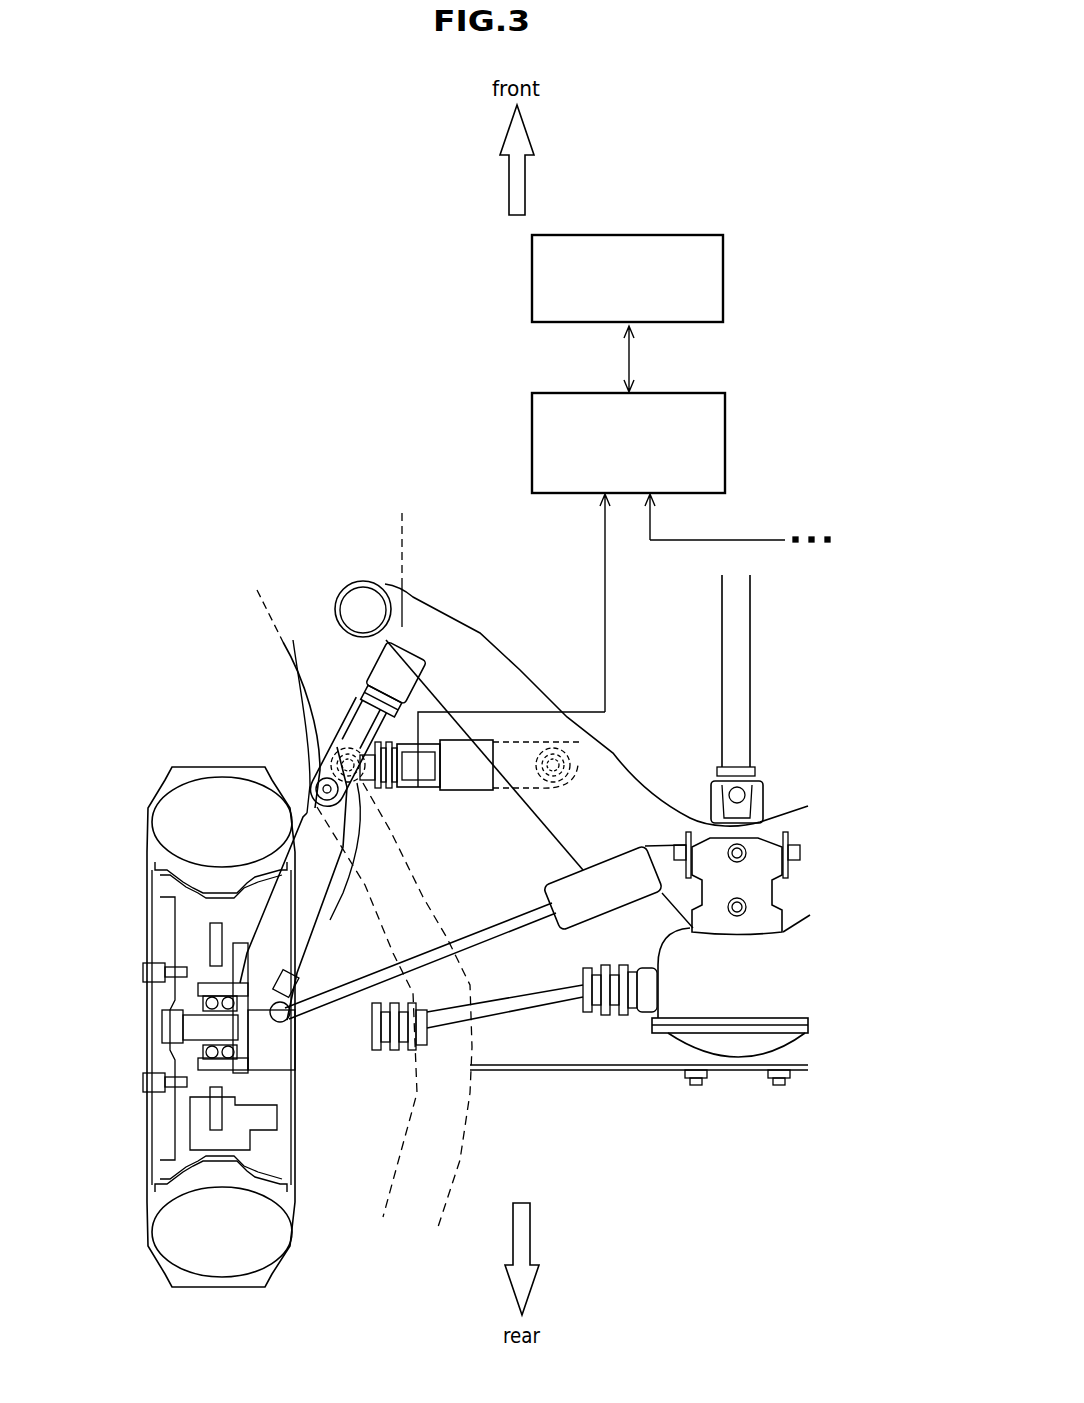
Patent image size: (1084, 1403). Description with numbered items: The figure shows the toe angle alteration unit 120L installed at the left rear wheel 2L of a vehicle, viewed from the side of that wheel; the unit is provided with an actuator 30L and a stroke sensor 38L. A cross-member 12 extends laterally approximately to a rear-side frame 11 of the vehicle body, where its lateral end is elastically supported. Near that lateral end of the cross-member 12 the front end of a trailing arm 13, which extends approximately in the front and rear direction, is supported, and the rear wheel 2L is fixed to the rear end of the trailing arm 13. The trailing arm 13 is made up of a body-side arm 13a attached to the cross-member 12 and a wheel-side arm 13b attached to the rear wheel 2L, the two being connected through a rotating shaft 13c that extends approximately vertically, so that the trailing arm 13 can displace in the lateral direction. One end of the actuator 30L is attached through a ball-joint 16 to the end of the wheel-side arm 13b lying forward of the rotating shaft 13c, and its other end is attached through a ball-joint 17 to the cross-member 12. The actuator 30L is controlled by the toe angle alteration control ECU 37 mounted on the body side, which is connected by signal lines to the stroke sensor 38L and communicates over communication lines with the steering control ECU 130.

The steering control ECU 130 is at (723, 281).
The toe angle alteration control ECU 37 is at (725, 446).
The toe angle alteration unit 120L is at (243, 488).
The rear-side frame 11 is at (398, 529).
The cross-member 12 is at (627, 788).
The trailing arm 13 is at (302, 786).
The body-side arm 13a is at (380, 678).
The wheel-side arm 13b is at (297, 907).
The rotating shaft 13c is at (315, 768).
The ball-joint 16 is at (413, 1006).
The ball-joint 17 is at (580, 743).
The left rear wheel 2L is at (185, 765).
The actuator 30L is at (507, 742).
The stroke sensor 38L is at (420, 790).